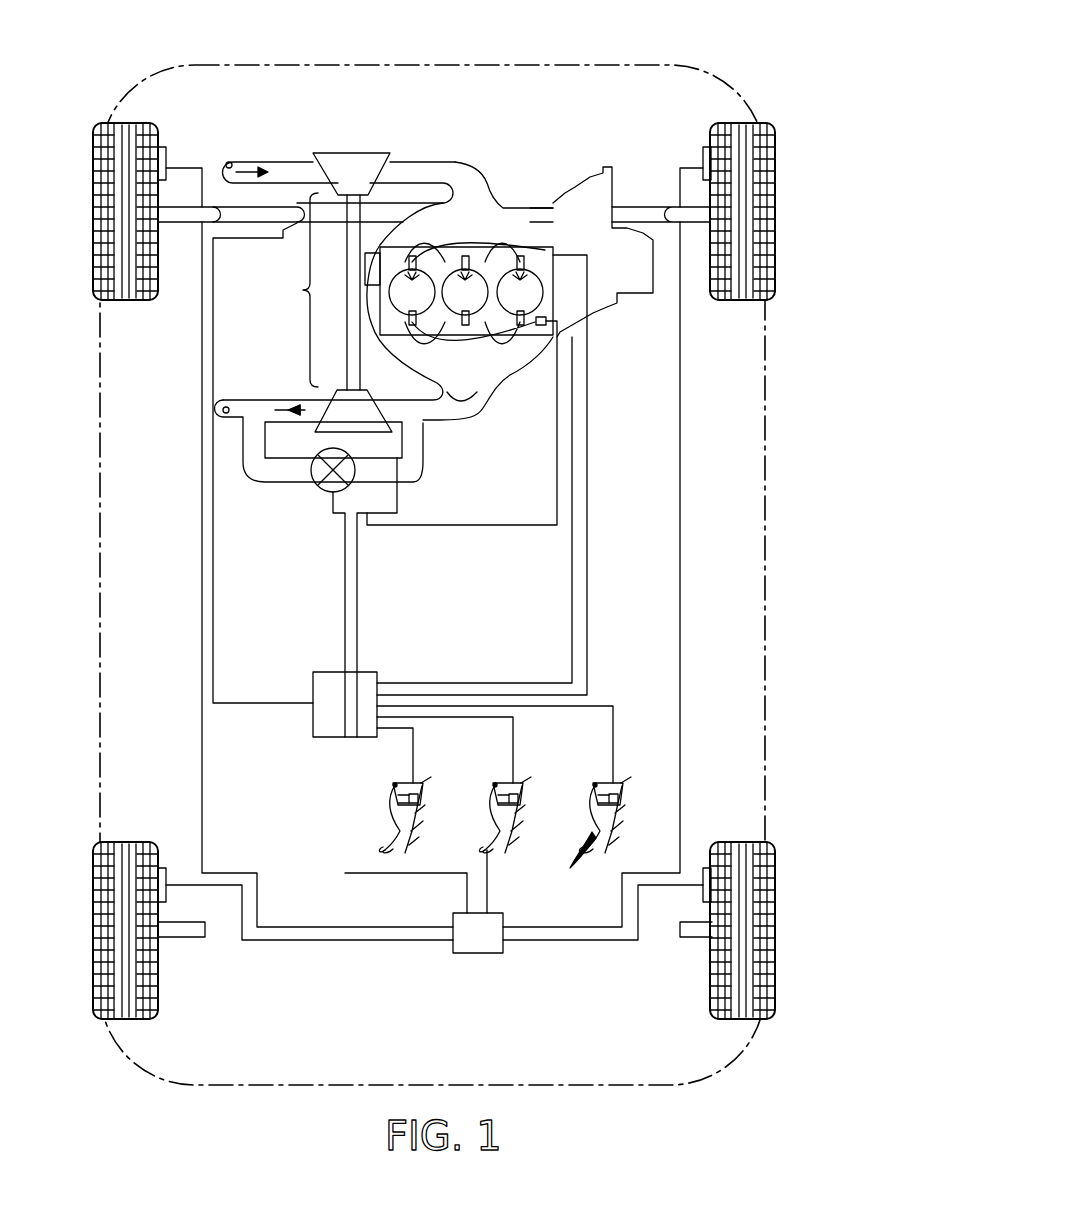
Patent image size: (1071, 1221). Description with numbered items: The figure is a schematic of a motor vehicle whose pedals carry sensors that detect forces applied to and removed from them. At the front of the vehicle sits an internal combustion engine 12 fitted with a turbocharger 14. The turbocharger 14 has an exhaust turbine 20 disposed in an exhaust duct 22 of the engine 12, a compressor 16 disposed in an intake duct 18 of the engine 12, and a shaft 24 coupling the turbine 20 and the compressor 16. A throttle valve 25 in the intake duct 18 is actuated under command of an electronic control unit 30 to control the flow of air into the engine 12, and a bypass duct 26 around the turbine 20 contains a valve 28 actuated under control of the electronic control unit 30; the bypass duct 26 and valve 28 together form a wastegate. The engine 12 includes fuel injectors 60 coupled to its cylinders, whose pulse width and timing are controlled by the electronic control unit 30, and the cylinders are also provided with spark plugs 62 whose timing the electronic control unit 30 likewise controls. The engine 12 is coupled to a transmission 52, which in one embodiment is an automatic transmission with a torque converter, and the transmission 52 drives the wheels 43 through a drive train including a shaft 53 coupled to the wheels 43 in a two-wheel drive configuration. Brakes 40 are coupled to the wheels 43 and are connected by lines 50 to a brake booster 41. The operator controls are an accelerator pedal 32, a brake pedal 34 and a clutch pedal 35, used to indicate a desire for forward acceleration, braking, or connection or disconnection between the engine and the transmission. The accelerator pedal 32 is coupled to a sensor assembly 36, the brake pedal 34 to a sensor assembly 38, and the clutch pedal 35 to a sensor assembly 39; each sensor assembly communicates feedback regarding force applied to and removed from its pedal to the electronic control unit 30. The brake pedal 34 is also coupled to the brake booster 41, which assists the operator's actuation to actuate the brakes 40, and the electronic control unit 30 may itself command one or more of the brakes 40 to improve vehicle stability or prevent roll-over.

The internal combustion engine 12 is at (452, 452).
The turbocharger 14 is at (294, 290).
The compressor 16 is at (355, 158).
The intake duct 18 is at (463, 180).
The exhaust turbine 20 is at (335, 428).
The exhaust duct 22 is at (475, 385).
The shaft 24 is at (343, 327).
The throttle valve 25 is at (290, 185).
The bypass duct 26 is at (418, 445).
The valve 28 is at (327, 492).
The electronic control unit 30 is at (323, 737).
The accelerator pedal 32 is at (595, 815).
The brake pedal 34 is at (495, 815).
The clutch pedal 35 is at (395, 815).
The sensor assembly 36 is at (526, 787).
The sensor assembly 38 is at (476, 815).
The sensor assembly 39 is at (409, 790).
The brakes 40 is at (164, 147).
The brake booster 41 is at (478, 935).
The wheels 43 is at (93, 206).
The brake line 50 is at (370, 940).
The transmission 52 is at (614, 295).
The shaft 53 is at (388, 205).
The fuel injectors 60 is at (300, 318).
The spark plugs 62 is at (470, 346).